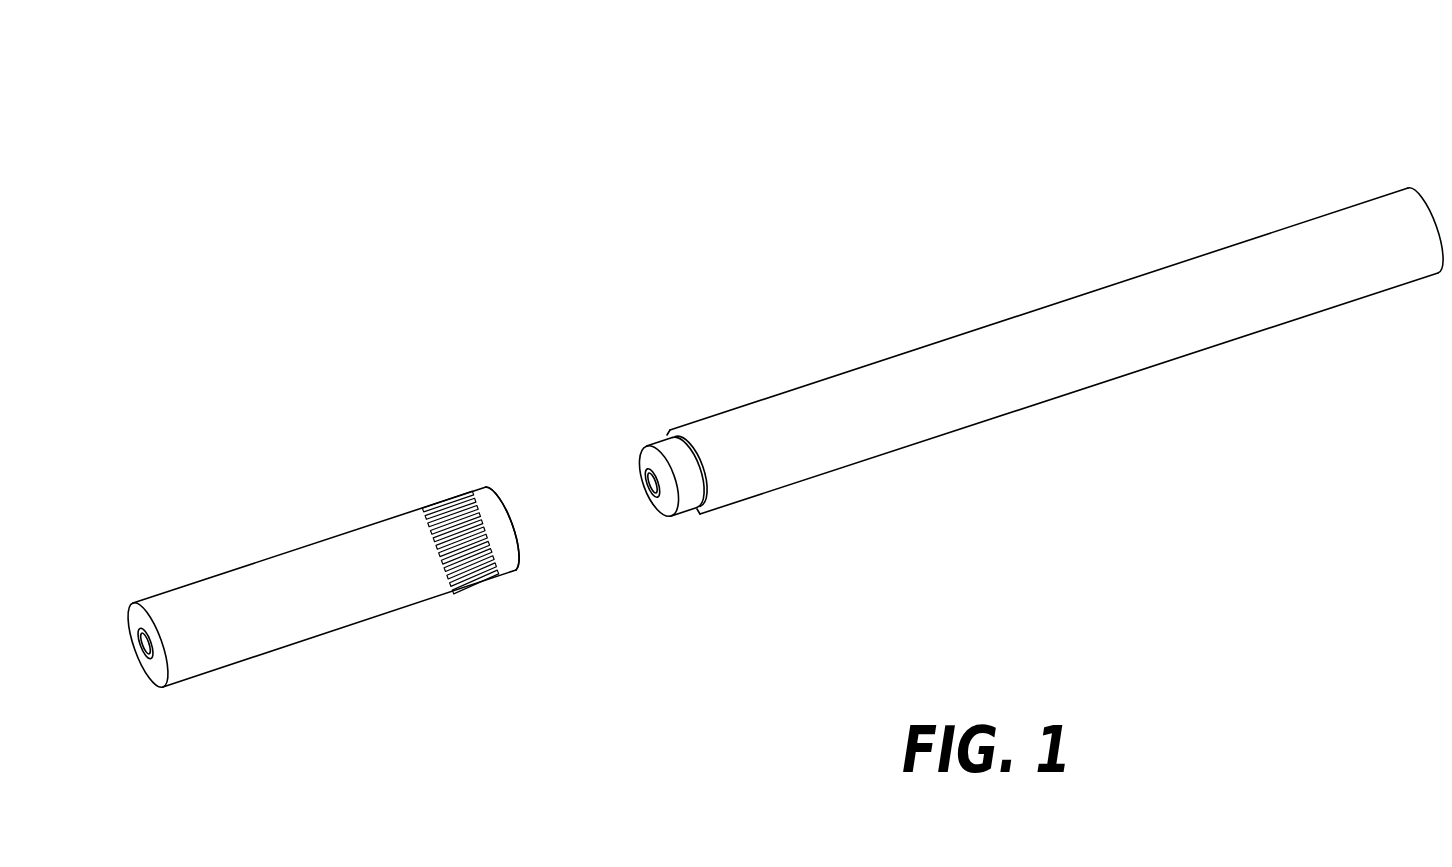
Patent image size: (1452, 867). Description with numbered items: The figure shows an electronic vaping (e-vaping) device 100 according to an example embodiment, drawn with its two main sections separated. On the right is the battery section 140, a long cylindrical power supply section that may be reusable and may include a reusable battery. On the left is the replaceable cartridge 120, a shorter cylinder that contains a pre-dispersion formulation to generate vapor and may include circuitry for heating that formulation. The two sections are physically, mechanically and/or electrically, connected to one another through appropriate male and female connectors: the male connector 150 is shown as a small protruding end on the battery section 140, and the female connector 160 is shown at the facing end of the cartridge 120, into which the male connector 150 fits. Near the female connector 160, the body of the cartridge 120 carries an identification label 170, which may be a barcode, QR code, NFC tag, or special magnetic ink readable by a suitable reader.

The electronic vaping (e-vaping) device 100 is at (1210, 82).
The replaceable cartridge 120 is at (308, 545).
The battery section 140 is at (1218, 433).
The male connector 150 is at (609, 583).
The female connector 160 is at (507, 523).
The identification label 170 is at (440, 660).